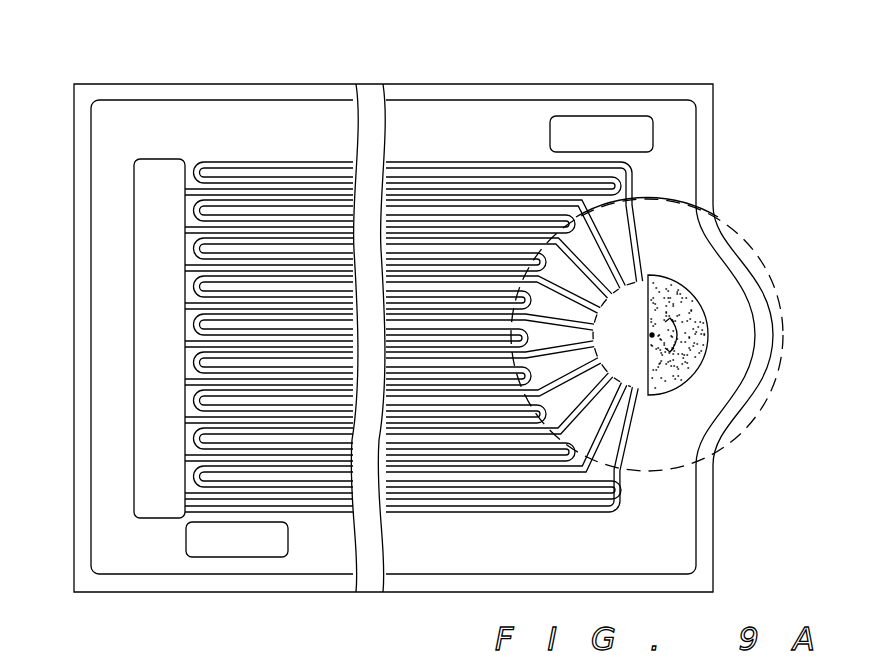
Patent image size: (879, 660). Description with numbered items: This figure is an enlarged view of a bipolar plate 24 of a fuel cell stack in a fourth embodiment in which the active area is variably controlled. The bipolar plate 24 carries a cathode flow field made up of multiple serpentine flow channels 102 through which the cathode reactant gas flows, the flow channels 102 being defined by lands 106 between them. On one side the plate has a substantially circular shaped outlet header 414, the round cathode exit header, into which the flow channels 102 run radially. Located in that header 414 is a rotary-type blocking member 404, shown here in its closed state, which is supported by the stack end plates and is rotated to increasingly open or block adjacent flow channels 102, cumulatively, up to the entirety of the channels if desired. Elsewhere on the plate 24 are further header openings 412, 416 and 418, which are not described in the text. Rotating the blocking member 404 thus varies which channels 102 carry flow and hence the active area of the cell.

The bipolar plate 24 is at (247, 63).
The flow channels 102 is at (445, 513).
The lands 106 is at (541, 494).
The rotary-type blocking member 404 is at (687, 372).
The manifold 412 is at (152, 297).
The substantially circular shaped outlet header 414 is at (622, 313).
The port 416 is at (232, 545).
The port 418 is at (587, 133).